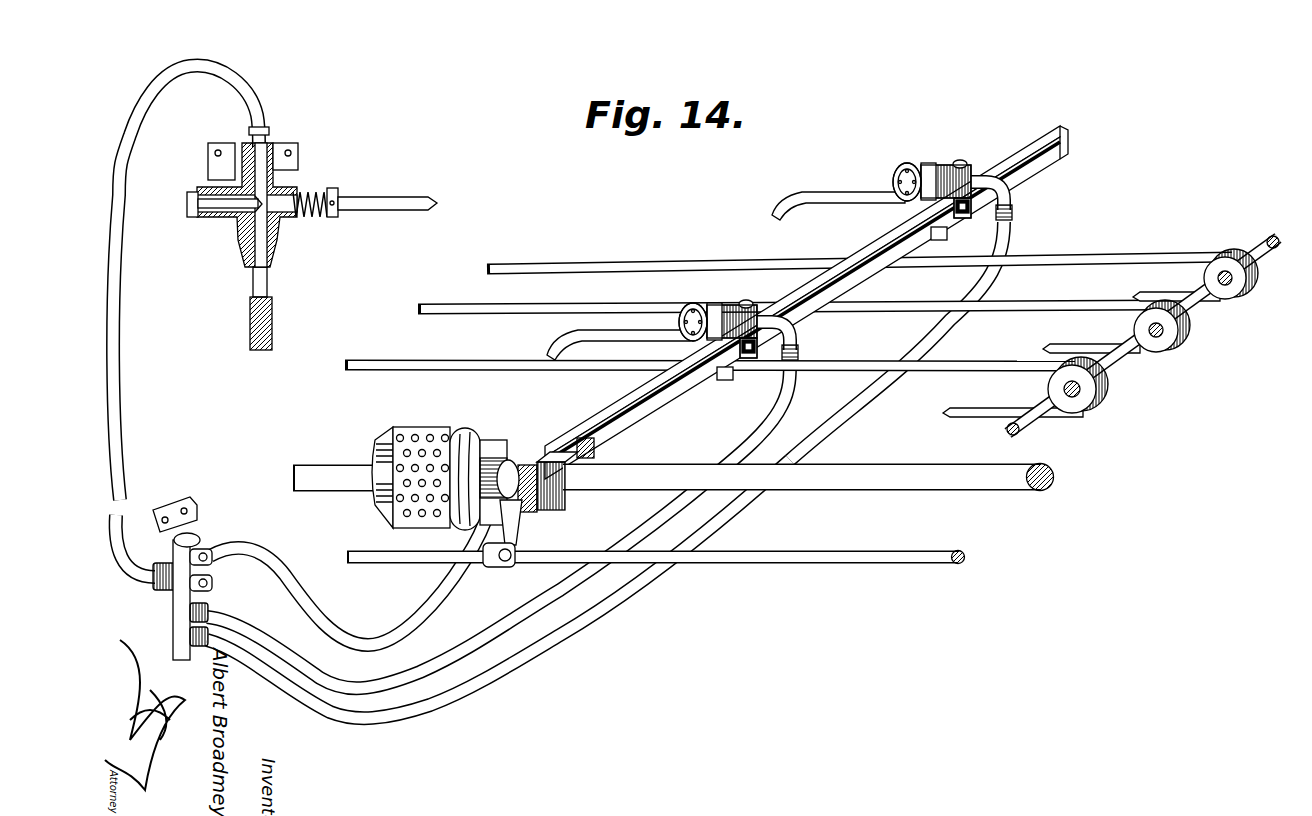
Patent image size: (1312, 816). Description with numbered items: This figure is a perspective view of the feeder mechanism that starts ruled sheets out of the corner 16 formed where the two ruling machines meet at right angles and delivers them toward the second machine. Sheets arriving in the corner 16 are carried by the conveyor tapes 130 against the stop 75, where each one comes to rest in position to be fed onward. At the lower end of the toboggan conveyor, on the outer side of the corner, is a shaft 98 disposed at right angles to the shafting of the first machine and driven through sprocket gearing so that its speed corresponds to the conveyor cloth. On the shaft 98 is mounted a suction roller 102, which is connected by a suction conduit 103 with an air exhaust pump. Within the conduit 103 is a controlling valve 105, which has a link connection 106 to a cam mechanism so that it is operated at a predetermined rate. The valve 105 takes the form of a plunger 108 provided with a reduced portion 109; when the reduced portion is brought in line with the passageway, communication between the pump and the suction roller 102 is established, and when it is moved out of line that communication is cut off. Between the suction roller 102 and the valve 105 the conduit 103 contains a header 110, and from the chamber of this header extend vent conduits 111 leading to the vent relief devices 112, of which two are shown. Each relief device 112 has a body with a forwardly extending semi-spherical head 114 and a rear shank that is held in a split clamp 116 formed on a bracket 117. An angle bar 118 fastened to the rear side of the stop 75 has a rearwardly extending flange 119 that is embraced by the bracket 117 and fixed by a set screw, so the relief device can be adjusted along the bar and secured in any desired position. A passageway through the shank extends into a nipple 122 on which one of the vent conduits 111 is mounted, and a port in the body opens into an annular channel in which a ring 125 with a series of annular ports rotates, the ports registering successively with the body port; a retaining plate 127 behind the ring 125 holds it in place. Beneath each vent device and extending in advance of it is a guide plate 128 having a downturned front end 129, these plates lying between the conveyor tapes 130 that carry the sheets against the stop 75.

The corner 16 is at (802, 291).
The stop 75 is at (578, 445).
The shaft 98 is at (320, 478).
The suction roller 102 is at (410, 428).
The suction conduit 103 is at (128, 355).
The controlling valve 105 is at (287, 240).
The link connection 106 is at (400, 200).
The plunger 108 is at (186, 212).
The reduced portion 109 is at (240, 226).
The header 110 is at (193, 535).
The vent conduits 111 is at (395, 690).
The vent relief devices 112 is at (733, 300).
The semi-spherical head 114 is at (683, 307).
The split clamp 116 is at (740, 357).
The bracket 117 is at (790, 372).
The angle bar 118 is at (590, 460).
The flange 119 is at (653, 397).
The nipple 122 is at (800, 342).
The ring 125 is at (920, 170).
The retaining plate 127 is at (710, 307).
The guide plate 128 is at (857, 188).
The downturned front end 129 is at (780, 213).
The conveyor tapes 130 is at (553, 252).